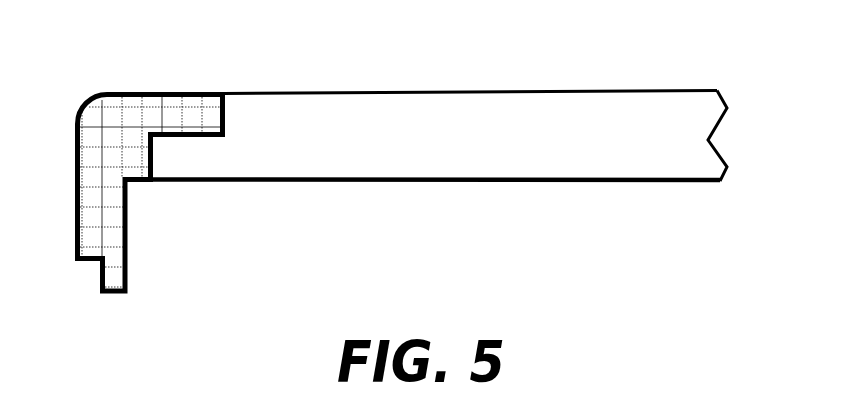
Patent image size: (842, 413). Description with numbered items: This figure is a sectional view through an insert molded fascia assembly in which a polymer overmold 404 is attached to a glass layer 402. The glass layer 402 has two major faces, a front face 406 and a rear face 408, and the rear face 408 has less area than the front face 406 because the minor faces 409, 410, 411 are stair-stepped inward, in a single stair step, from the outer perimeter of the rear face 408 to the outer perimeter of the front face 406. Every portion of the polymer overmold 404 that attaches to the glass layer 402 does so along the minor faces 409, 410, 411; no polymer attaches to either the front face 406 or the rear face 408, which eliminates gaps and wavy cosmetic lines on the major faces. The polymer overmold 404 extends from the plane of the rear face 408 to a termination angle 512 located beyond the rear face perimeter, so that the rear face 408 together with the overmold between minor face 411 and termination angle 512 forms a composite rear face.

The glass layer 402 is at (600, 50).
The polymer overmold 404 is at (148, 92).
The front face 406 is at (375, 92).
The rear face 408 is at (330, 180).
The minor face 409 is at (225, 118).
The minor face 410 is at (183, 138).
The minor face 411 is at (155, 157).
The termination angle 512 is at (128, 182).